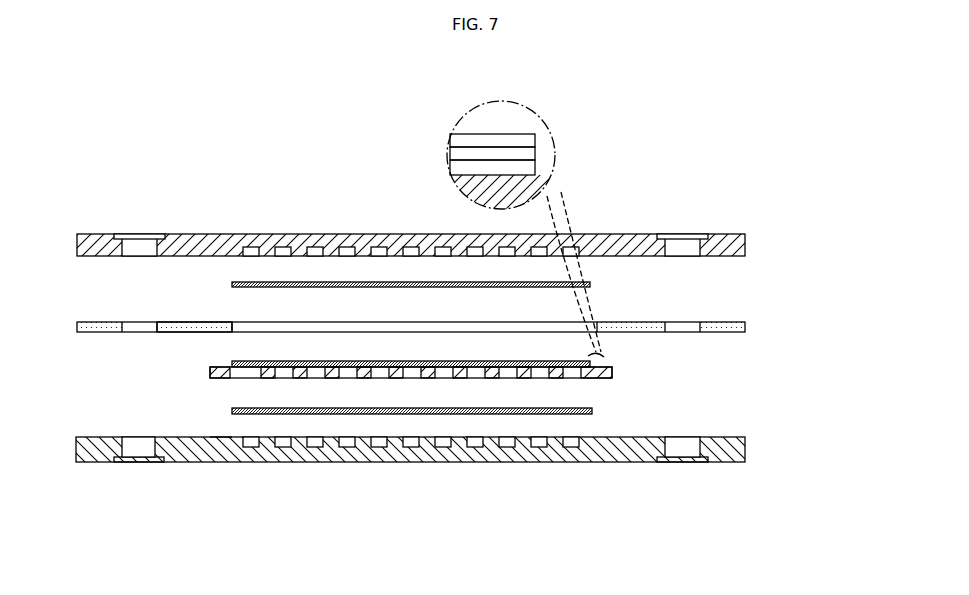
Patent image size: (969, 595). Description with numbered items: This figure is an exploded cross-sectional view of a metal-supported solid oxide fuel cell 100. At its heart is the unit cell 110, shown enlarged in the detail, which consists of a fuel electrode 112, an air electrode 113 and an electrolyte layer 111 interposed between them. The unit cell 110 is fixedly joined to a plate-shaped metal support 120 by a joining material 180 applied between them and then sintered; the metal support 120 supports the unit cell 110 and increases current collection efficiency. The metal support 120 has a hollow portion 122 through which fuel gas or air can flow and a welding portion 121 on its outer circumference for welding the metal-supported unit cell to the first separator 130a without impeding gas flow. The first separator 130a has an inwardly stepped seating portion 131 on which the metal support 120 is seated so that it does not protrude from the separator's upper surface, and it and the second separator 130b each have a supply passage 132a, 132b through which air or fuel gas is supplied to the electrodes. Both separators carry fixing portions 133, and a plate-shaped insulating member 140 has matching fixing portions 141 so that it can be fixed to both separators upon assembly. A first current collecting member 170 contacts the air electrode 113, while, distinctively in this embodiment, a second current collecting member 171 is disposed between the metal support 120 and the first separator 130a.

The metal-supported solid oxide fuel cell 100 is at (686, 150).
The unit cell 110 is at (618, 128).
The electrolyte layer 111 is at (535, 154).
The fuel electrode 112 is at (535, 167).
The air electrode 113 is at (535, 141).
The metal support 120 is at (633, 373).
The welding portion 121 is at (606, 370).
The hollow portion 122 is at (572, 378).
The first separator 130a is at (245, 466).
The second separator 130b is at (311, 229).
The seating portion 131 is at (218, 437).
The supply passage 132a is at (305, 463).
The supply passage 132b is at (255, 236).
The fixing portions 133 is at (150, 238).
The insulating member 140 is at (747, 320).
The fixing portions 141 is at (135, 333).
The first current collecting member 170 is at (229, 285).
The second current collecting member 171 is at (599, 413).
The joining material 180 is at (449, 175).